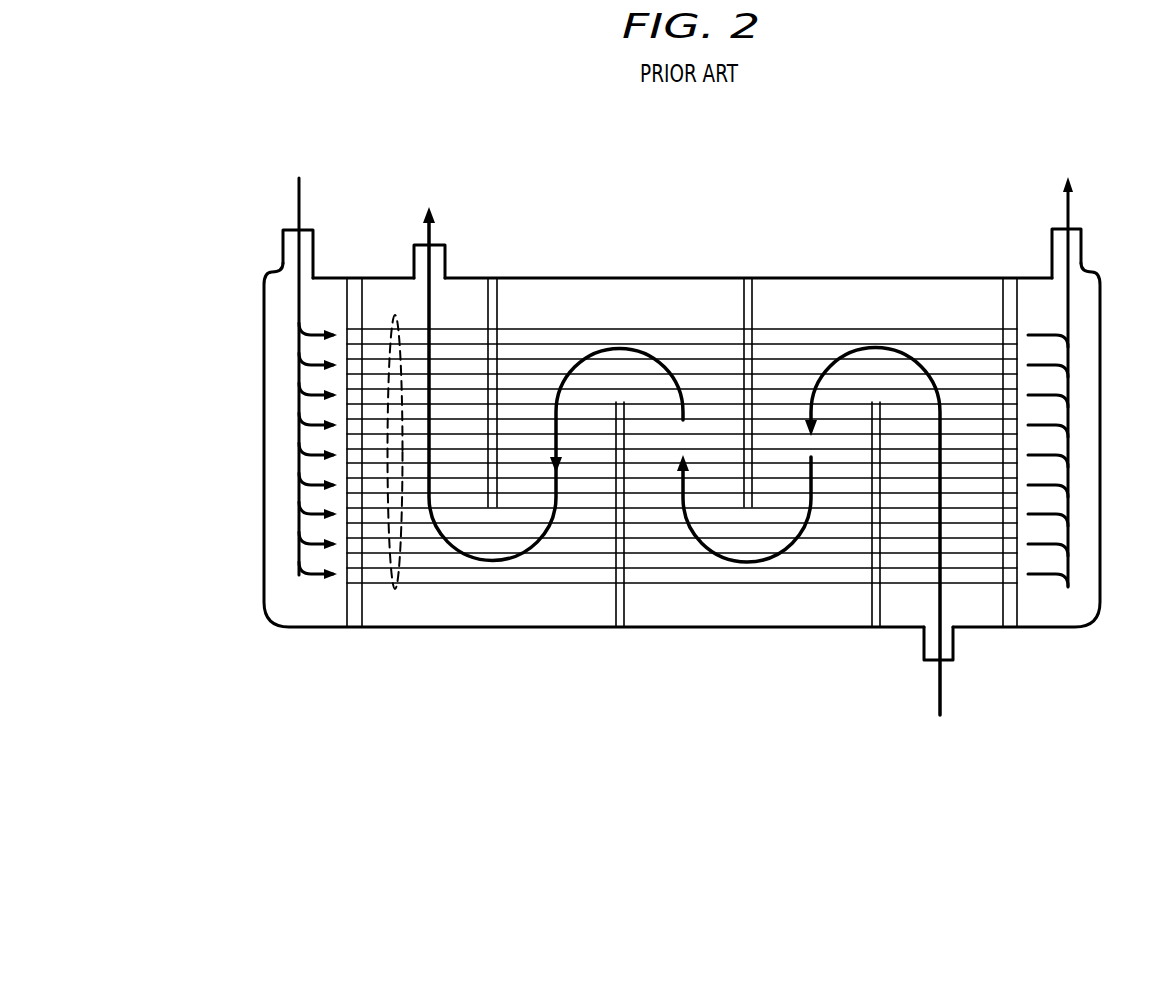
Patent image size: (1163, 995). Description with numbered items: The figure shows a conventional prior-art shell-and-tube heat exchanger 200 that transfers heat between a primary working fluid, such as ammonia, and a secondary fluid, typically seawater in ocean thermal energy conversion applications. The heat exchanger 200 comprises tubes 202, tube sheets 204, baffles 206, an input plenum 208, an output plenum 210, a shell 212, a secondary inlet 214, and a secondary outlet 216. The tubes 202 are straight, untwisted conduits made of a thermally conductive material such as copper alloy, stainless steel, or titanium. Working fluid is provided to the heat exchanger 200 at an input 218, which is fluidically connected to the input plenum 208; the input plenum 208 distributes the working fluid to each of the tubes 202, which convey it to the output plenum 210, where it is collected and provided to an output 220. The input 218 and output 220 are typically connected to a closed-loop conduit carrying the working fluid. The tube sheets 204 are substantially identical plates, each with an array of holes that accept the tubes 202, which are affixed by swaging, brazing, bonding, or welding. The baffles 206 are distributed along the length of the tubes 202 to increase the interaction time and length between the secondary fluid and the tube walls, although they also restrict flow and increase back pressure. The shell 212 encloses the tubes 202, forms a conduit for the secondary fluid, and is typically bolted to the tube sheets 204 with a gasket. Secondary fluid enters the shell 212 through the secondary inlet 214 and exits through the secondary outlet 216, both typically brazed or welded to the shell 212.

The heat exchanger 200 is at (204, 98).
The tubes 202 is at (395, 588).
The tube sheets 204 is at (293, 657).
The baffles 206 is at (873, 630).
The input plenum 208 is at (262, 439).
The output plenum 210 is at (1077, 605).
The shell 212 is at (790, 278).
The secondary inlet 214 is at (955, 645).
The secondary outlet 216 is at (413, 263).
The input 218 is at (283, 240).
The output 220 is at (1083, 250).